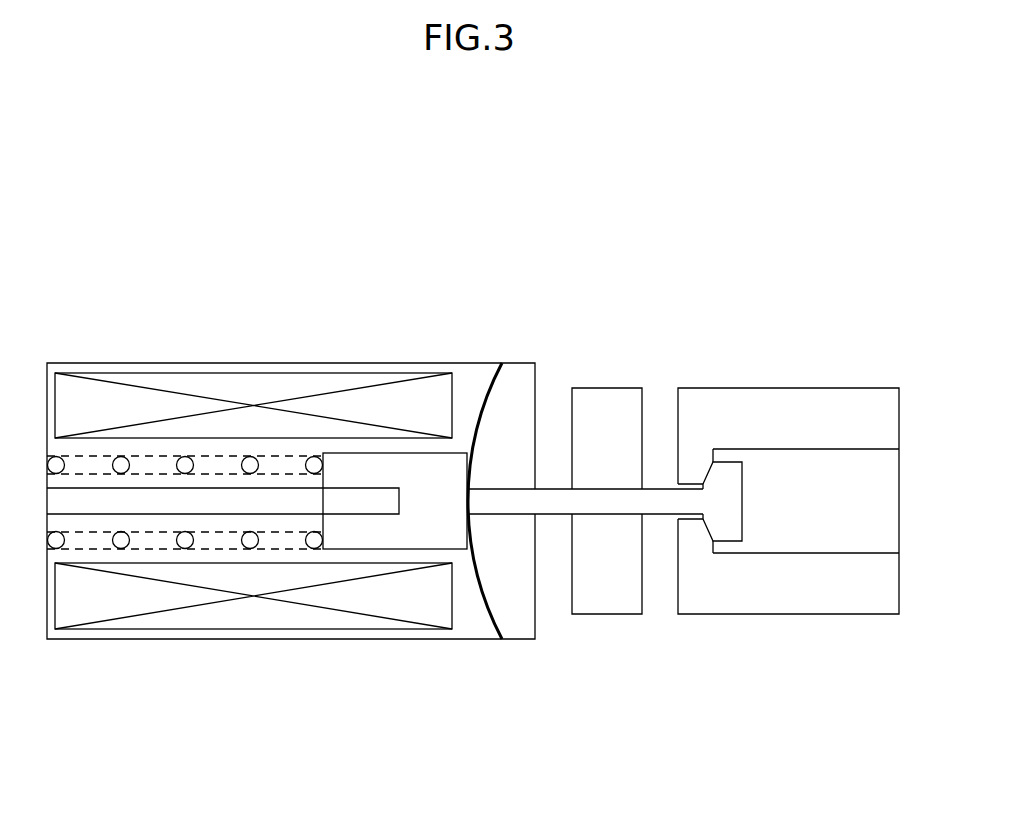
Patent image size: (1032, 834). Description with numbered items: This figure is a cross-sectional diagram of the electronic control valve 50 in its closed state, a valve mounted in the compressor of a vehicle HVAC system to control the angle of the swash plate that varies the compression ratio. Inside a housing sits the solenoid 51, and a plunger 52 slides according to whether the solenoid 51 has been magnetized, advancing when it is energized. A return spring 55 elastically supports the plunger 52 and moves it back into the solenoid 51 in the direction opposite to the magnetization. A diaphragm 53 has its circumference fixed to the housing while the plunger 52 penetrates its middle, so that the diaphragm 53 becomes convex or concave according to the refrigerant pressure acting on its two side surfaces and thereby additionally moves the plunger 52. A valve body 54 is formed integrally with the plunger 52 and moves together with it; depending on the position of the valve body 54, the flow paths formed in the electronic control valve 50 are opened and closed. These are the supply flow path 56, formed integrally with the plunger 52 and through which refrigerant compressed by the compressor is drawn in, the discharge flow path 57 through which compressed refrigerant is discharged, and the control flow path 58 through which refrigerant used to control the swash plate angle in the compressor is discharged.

The electronic control valve 50 is at (778, 196).
The solenoid 51 is at (228, 618).
The plunger 52 is at (432, 530).
The diaphragm 53 is at (482, 410).
The valve body 54 is at (688, 500).
The return spring 55 is at (185, 462).
The supply flow path 56 is at (565, 427).
The discharge flow path 57 is at (669, 427).
The control flow path 58 is at (797, 519).